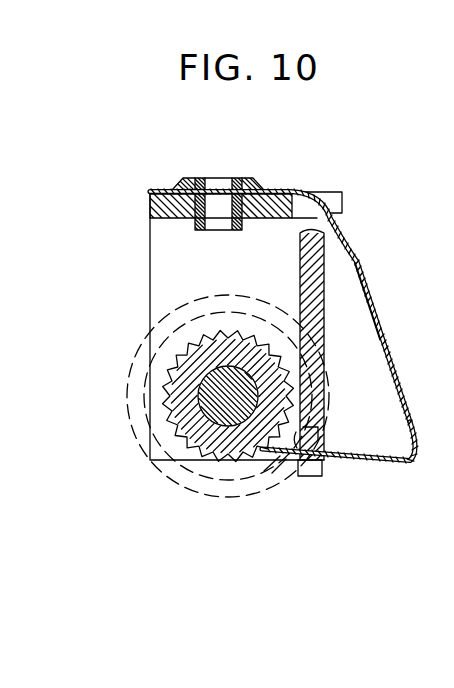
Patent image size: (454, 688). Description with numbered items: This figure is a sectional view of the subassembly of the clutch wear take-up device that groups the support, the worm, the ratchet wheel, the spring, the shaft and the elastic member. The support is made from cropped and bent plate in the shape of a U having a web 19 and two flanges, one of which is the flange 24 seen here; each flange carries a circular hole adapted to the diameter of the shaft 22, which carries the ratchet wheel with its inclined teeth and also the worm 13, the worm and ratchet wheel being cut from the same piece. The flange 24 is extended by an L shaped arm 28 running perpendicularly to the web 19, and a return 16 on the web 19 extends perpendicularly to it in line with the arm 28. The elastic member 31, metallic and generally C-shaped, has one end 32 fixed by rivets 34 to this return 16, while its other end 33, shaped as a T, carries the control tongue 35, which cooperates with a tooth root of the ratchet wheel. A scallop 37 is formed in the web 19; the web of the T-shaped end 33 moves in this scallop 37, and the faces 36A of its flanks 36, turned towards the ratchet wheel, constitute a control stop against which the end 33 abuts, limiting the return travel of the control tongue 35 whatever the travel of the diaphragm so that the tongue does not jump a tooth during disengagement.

The worm 13 is at (124, 357).
The return 16 is at (148, 208).
The web 19 is at (328, 287).
The shaft 22 is at (196, 400).
The flange 24 is at (160, 250).
The L shaped arm 28 is at (342, 198).
The elastic member 31 is at (358, 240).
The end 32 is at (283, 187).
The end 33 is at (367, 468).
The rivet 34 is at (191, 178).
The control tongue 35 is at (275, 452).
The flank 36 is at (308, 472).
The face 36A is at (297, 442).
The scallop 37 is at (318, 427).